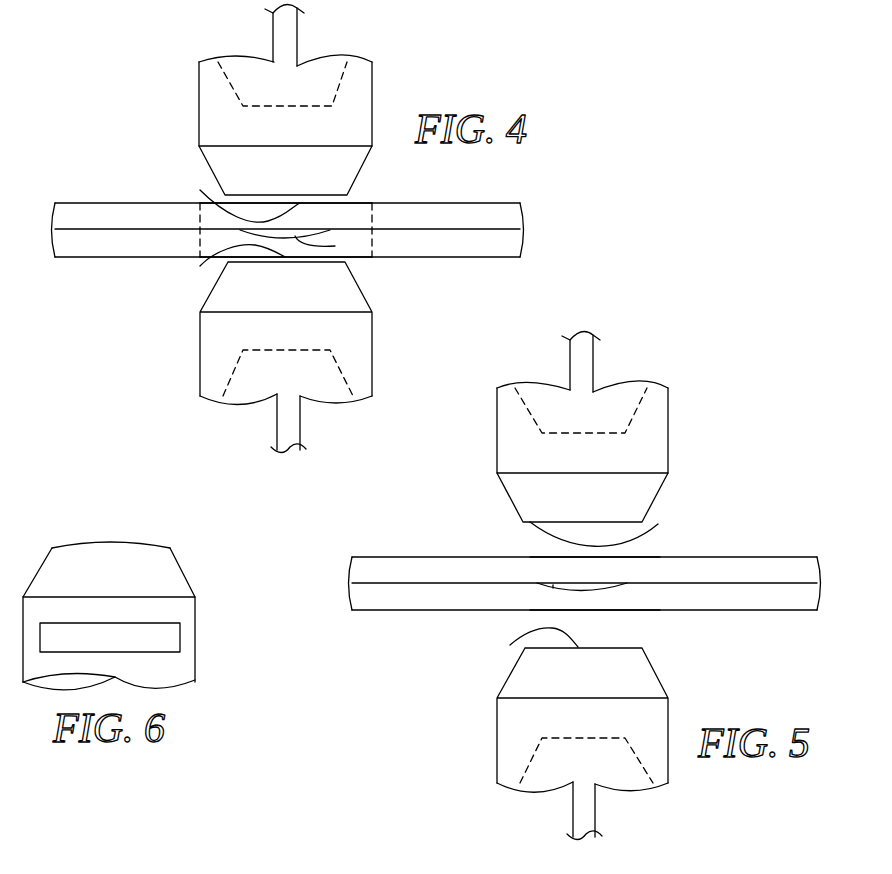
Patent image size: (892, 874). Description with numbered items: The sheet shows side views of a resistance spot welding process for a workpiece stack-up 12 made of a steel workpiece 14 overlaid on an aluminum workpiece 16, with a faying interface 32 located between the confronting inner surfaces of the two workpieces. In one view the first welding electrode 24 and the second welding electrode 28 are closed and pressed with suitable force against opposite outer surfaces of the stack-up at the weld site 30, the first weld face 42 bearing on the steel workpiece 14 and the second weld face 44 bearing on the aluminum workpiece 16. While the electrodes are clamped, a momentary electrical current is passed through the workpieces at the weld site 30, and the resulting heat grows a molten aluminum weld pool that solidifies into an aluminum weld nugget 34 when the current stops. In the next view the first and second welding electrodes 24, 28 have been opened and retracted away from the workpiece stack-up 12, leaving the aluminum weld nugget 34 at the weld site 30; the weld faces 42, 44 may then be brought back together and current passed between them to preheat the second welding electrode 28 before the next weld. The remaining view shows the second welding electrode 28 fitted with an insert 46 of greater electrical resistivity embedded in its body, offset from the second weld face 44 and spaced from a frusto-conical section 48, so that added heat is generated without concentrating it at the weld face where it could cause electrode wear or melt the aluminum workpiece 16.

In FIG. 4, the workpiece stack-up 12 is at (512, 203).
In FIG. 5, the workpiece stack-up 12 is at (784, 565).
In FIG. 4, the steel workpiece 14 is at (440, 218).
In FIG. 5, the steel workpiece 14 is at (707, 570).
In FIG. 4, the aluminum workpiece 16 is at (443, 240).
In FIG. 5, the aluminum workpiece 16 is at (742, 597).
In FIG. 4, the first welding electrode 24 is at (377, 82).
In FIG. 5, the first welding electrode 24 is at (670, 427).
In FIG. 4, the second welding electrode 28 is at (198, 357).
In FIG. 5, the second welding electrode 28 is at (670, 712).
In FIG. 6, the second welding electrode 28 is at (197, 620).
In FIG. 4, the weld site 30 is at (200, 240).
In FIG. 4, the faying interface 32 is at (290, 230).
In FIG. 5, the faying interface 32 is at (582, 583).
In FIG. 4, the aluminum weld nugget 34 is at (335, 246).
In FIG. 5, the aluminum weld nugget 34 is at (553, 585).
In FIG. 4, the first weld face 42 is at (235, 197).
In FIG. 5, the first weld face 42 is at (627, 545).
In FIG. 4, the second weld face 44 is at (200, 266).
In FIG. 5, the second weld face 44 is at (510, 645).
In FIG. 6, the second weld face 44 is at (110, 540).
In FIG. 6, the insert 46 is at (177, 635).
In FIG. 6, the frusto-conical section 48 is at (150, 573).